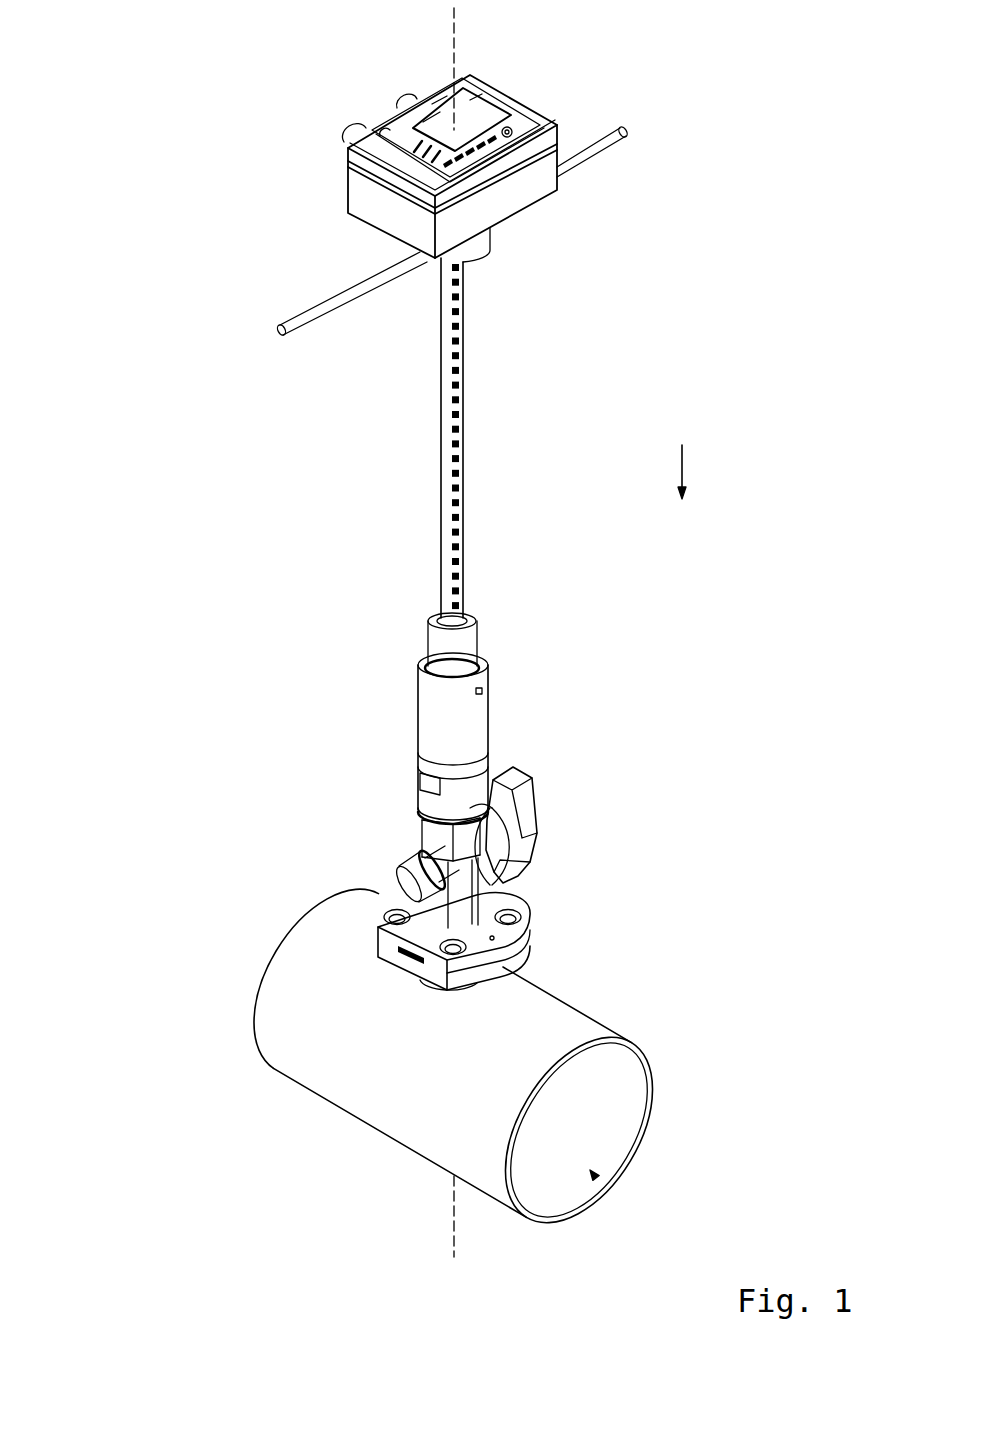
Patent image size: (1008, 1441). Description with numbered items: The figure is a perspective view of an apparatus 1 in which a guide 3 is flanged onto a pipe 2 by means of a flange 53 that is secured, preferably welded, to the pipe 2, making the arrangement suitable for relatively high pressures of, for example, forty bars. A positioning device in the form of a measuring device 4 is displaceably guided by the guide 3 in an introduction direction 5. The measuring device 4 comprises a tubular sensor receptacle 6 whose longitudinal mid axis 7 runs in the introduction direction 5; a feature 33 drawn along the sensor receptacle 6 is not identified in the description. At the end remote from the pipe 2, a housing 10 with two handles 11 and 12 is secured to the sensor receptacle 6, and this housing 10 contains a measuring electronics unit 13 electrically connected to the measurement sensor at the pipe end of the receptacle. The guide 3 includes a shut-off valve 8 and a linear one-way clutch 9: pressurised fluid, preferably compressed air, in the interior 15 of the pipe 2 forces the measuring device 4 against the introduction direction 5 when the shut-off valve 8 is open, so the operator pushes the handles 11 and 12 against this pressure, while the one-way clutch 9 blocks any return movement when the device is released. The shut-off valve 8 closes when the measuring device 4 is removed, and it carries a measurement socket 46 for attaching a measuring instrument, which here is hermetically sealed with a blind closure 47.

The apparatus 1 is at (148, 119).
The pipe 2 is at (468, 1068).
The guide 3 is at (428, 847).
The measuring device 4 is at (415, 149).
The introduction direction 5 is at (682, 465).
The tubular receptacle 6 is at (465, 438).
The longitudinal mid axis 7 is at (454, 30).
The shut-off valve 8 is at (537, 833).
The linear one-way clutch 9 is at (490, 725).
The housing 10 is at (393, 115).
The handle 11 is at (328, 307).
The handle 12 is at (607, 147).
The measuring electronics unit 13 is at (487, 118).
The interior 15 is at (597, 1178).
The scale 33 is at (463, 497).
The measurement socket 46 is at (404, 855).
The blind closure 47 is at (405, 880).
The flange 53 is at (527, 957).